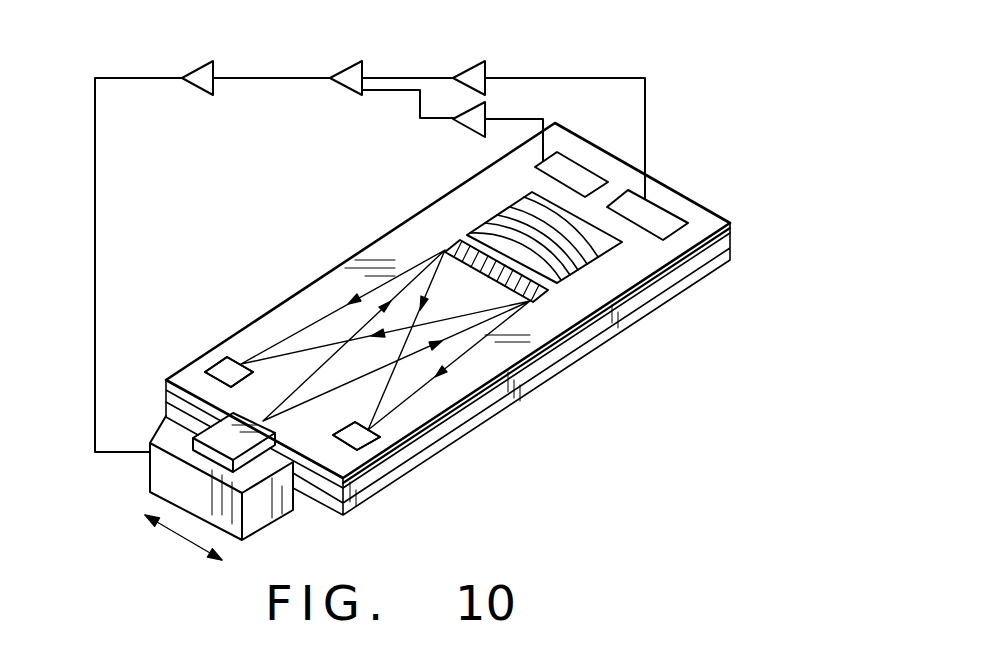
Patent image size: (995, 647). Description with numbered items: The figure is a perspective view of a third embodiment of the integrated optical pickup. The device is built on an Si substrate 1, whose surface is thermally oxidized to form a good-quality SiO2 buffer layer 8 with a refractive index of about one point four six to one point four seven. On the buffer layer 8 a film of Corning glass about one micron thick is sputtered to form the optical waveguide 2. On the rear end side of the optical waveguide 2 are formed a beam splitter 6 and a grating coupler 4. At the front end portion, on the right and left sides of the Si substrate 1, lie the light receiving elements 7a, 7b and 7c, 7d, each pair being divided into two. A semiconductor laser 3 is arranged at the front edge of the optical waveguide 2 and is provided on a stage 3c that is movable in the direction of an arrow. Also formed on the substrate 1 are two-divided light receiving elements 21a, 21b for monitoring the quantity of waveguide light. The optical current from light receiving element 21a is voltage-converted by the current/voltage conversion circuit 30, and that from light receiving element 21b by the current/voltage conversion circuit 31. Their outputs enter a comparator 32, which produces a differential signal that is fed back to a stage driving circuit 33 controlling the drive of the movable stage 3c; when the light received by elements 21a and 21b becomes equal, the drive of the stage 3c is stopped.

The Si substrate 1 is at (692, 278).
The optical waveguide 2 is at (732, 223).
The semiconductor laser 3 is at (248, 442).
The stage 3c is at (150, 470).
The grating coupler 4 is at (587, 263).
The beam splitter 6 is at (543, 290).
The light receiving element 7a is at (225, 360).
The light receiving element 7b is at (223, 362).
The light receiving element 7c is at (340, 440).
The light receiving element 7d is at (372, 442).
The SiO2 buffer layer 8 is at (717, 247).
The light receiving element 21a is at (580, 178).
The light receiving element 21b is at (657, 222).
The current/voltage conversion circuit 30 is at (478, 117).
The current/voltage conversion circuit 31 is at (475, 67).
The comparator 32 is at (355, 70).
The stage driving circuit 33 is at (203, 68).